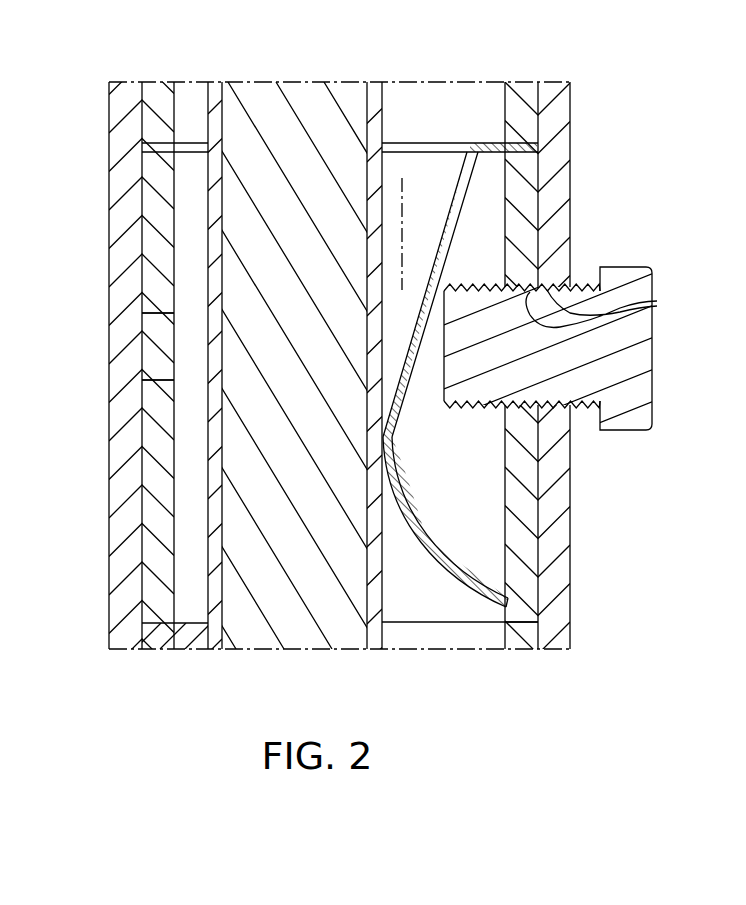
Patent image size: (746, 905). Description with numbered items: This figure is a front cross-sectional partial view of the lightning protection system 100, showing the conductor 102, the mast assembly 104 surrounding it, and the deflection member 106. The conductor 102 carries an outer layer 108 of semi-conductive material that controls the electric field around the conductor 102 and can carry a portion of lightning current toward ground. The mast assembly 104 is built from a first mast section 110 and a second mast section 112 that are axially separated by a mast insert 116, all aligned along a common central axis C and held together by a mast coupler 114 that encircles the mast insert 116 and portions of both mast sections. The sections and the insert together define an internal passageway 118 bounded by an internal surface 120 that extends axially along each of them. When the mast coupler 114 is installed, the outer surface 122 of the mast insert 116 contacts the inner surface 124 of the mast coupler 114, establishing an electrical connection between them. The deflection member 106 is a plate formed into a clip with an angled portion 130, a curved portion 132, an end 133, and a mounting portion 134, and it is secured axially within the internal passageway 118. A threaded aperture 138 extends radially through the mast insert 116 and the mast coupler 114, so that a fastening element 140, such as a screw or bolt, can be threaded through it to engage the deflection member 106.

The lightning protection system 100 is at (513, 43).
The conductor 102 is at (310, 101).
The mast assembly 104 is at (588, 122).
The deflection member 106 is at (430, 578).
The outer layer 108 is at (208, 97).
The first mast section 110 is at (502, 113).
The second mast section 112 is at (503, 630).
The mast coupler 114 is at (128, 588).
The mast insert 116 is at (155, 485).
The internal passageway 118 is at (394, 116).
The internal surface 120 is at (174, 457).
The outer surface 122 is at (157, 272).
The inner surface 124 is at (142, 240).
The angled portion 130 is at (468, 188).
The curved portion 132 is at (410, 530).
The end 133 is at (517, 604).
The mounting portion 134 is at (496, 143).
The threaded aperture 138 is at (657, 301).
The fastening element 140 is at (610, 375).
The central axis C is at (402, 240).